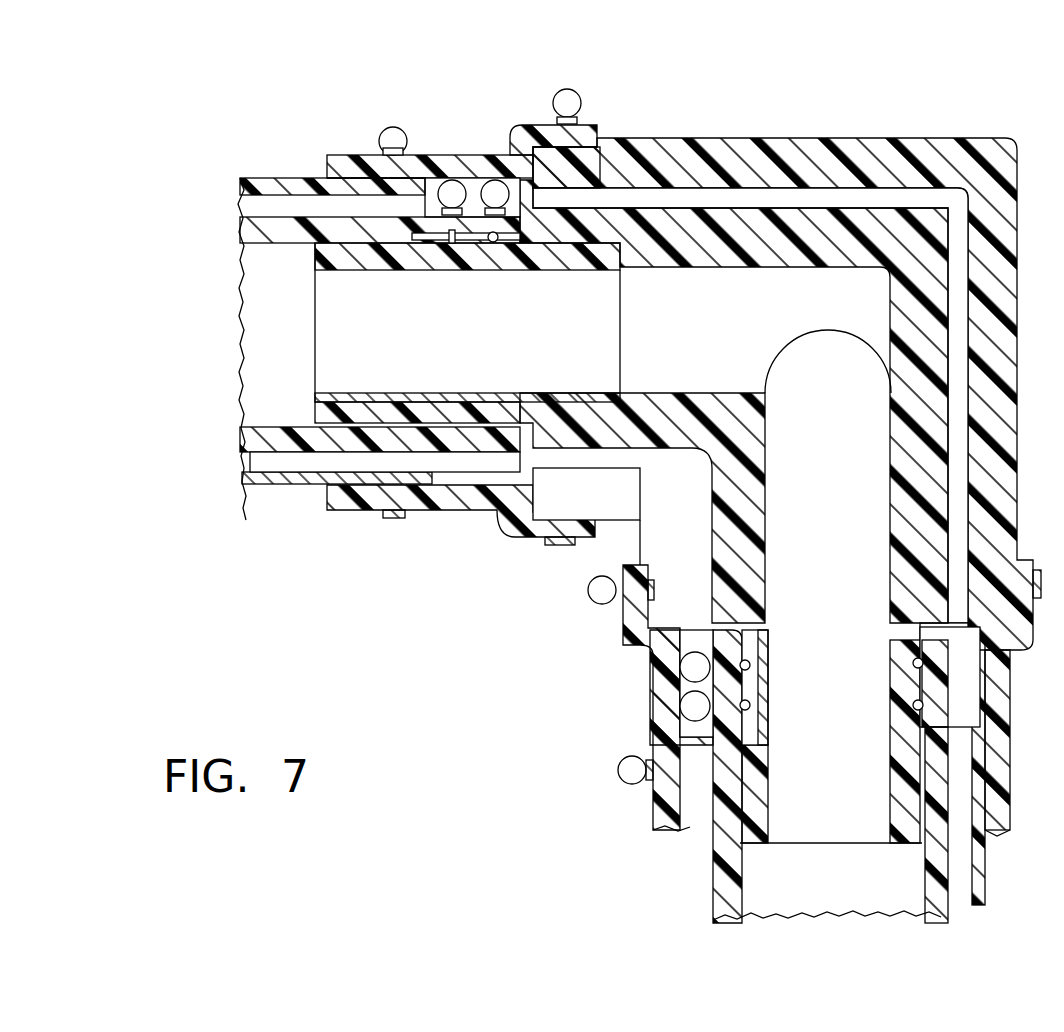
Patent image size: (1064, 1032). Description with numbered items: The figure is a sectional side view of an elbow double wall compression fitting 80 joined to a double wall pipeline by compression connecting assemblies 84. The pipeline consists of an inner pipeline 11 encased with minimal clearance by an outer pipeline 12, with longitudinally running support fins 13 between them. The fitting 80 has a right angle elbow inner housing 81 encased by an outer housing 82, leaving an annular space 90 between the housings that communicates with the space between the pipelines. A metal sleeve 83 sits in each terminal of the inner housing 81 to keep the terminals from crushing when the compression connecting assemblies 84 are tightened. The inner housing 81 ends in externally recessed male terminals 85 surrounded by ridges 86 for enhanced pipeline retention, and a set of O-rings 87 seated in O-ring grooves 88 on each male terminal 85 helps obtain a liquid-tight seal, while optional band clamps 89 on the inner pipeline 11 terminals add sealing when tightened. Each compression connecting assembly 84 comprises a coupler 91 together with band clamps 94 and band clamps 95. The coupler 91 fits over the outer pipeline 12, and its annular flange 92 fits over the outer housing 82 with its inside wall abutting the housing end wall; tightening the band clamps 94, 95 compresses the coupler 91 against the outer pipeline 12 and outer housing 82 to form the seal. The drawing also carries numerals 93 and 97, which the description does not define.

The inner pipeline 11 is at (258, 440).
The outer pipeline 12 is at (280, 487).
The support fins 13 is at (320, 470).
The double wall compression fitting 80 is at (606, 542).
The right angle elbow inner housing 81 is at (778, 245).
The outer housing 82 is at (782, 145).
The metal sleeve 83 is at (465, 362).
The compression connecting assembly 84 is at (450, 112).
The male terminal 85 is at (358, 255).
The ridges 86 is at (352, 247).
The O-rings 87 is at (450, 247).
The O-ring grooves 88 is at (455, 230).
The band clamps 89 is at (452, 180).
The annular space 90 is at (888, 197).
The coupler 91 is at (362, 163).
The annular flange 92 is at (578, 135).
The end cap 93 is at (627, 140).
The band clamps 94 is at (390, 128).
The band clamps 95 is at (567, 89).
The shoulder 97 is at (415, 175).